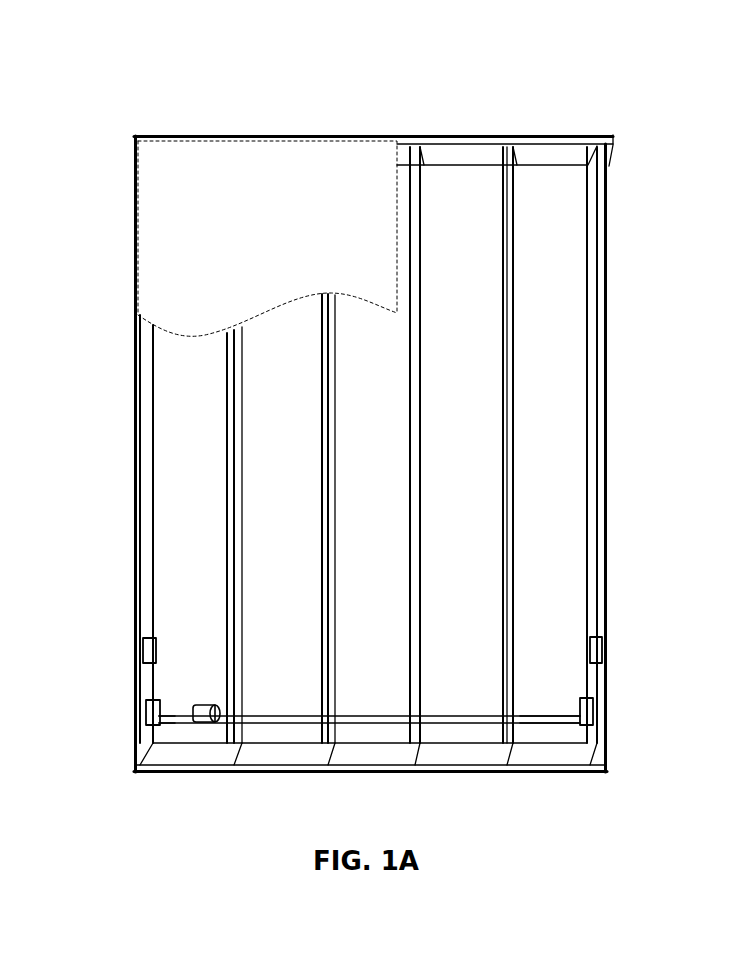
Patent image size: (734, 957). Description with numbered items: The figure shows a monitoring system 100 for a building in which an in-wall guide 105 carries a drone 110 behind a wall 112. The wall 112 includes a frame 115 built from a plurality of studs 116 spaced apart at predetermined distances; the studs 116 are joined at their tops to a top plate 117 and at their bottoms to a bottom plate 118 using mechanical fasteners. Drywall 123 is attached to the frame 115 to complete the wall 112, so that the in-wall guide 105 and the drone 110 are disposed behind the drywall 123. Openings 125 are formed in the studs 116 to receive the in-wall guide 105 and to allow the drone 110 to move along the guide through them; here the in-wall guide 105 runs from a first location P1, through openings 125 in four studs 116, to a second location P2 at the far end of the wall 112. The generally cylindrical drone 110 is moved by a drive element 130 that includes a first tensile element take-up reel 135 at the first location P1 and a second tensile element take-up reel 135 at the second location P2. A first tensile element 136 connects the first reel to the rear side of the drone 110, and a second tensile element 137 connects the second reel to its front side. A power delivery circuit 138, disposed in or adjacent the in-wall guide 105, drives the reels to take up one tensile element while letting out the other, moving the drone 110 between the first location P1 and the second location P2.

The monitoring system 100 is at (256, 848).
The in-wall guide 105 is at (442, 725).
The drone 110 is at (196, 705).
The wall 112 is at (567, 76).
The frame 115 is at (447, 132).
The studs 116 is at (151, 402).
The top plate 117 is at (613, 137).
The bottom plate 118 is at (287, 752).
The drywall 123 is at (180, 150).
The openings 125 is at (246, 705).
The drive element 130 is at (569, 674).
The tensile element take-up reel 135 is at (148, 707).
The first tensile element 136 is at (170, 712).
The second tensile element 137 is at (527, 710).
The power delivery circuit 138 is at (143, 648).
The first location P1 is at (166, 738).
The second location P2 is at (578, 731).